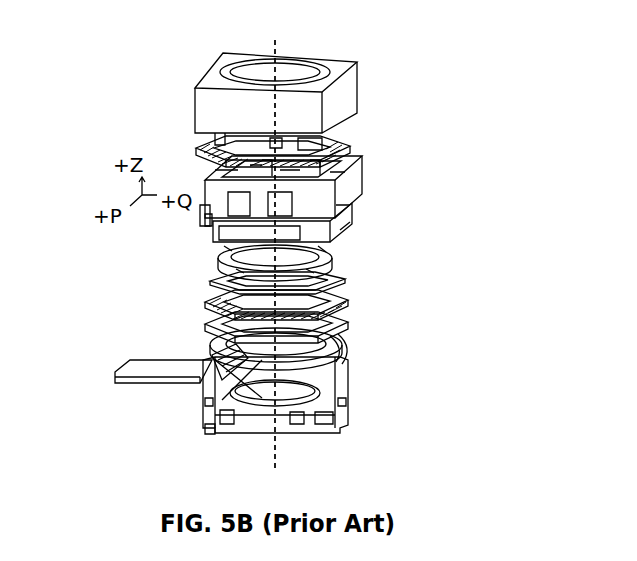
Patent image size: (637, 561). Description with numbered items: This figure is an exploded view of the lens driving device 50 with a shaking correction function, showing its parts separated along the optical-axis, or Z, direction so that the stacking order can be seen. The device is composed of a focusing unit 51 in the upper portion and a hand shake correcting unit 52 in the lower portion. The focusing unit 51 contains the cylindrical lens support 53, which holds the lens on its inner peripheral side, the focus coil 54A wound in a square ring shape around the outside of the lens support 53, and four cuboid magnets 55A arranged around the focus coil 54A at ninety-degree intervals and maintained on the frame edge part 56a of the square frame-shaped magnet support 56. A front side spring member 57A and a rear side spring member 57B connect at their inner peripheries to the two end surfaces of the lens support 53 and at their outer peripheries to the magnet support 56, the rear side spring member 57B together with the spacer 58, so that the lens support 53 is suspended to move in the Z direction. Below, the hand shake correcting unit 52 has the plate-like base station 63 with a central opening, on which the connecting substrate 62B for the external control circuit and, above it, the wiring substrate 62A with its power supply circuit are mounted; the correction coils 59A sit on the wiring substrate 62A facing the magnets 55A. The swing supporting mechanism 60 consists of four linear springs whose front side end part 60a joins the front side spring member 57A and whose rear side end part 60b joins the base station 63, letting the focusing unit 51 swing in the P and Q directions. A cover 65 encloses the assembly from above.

The lens driving device 50 is at (138, 73).
The focusing unit 51 is at (384, 115).
The hand shake correcting unit 52 is at (146, 305).
The lens support 53 is at (336, 252).
The focus coil 54A is at (339, 280).
The magnets 55A is at (337, 229).
The magnet support 56 is at (346, 190).
The frame edge part 56a is at (205, 220).
The front side spring member 57A is at (336, 151).
The rear side spring member 57B is at (344, 305).
The spacer 58 is at (346, 332).
The correction coils 59A is at (348, 356).
The swing supporting mechanism 60 is at (203, 390).
The front side end part 60a is at (233, 435).
The rear side end part 60b is at (348, 426).
The wiring substrate 62A is at (218, 352).
The connecting substrate 62B is at (168, 356).
The base station 63 is at (205, 430).
The cover 65 is at (327, 62).